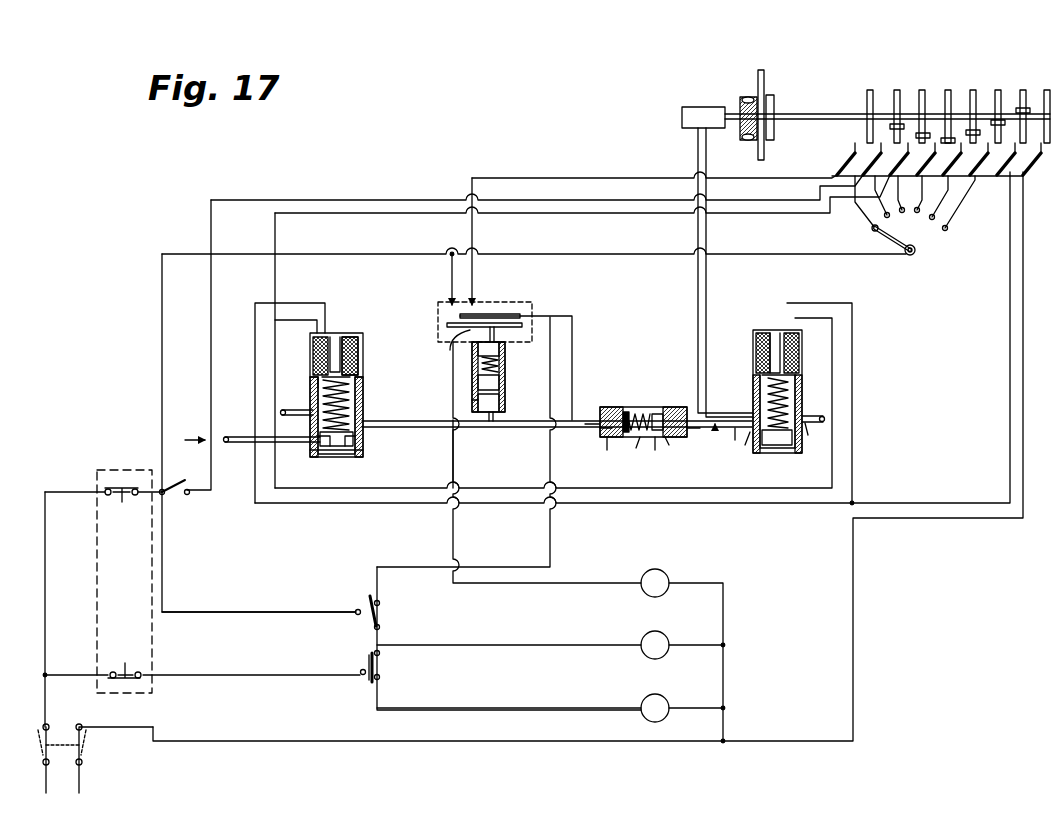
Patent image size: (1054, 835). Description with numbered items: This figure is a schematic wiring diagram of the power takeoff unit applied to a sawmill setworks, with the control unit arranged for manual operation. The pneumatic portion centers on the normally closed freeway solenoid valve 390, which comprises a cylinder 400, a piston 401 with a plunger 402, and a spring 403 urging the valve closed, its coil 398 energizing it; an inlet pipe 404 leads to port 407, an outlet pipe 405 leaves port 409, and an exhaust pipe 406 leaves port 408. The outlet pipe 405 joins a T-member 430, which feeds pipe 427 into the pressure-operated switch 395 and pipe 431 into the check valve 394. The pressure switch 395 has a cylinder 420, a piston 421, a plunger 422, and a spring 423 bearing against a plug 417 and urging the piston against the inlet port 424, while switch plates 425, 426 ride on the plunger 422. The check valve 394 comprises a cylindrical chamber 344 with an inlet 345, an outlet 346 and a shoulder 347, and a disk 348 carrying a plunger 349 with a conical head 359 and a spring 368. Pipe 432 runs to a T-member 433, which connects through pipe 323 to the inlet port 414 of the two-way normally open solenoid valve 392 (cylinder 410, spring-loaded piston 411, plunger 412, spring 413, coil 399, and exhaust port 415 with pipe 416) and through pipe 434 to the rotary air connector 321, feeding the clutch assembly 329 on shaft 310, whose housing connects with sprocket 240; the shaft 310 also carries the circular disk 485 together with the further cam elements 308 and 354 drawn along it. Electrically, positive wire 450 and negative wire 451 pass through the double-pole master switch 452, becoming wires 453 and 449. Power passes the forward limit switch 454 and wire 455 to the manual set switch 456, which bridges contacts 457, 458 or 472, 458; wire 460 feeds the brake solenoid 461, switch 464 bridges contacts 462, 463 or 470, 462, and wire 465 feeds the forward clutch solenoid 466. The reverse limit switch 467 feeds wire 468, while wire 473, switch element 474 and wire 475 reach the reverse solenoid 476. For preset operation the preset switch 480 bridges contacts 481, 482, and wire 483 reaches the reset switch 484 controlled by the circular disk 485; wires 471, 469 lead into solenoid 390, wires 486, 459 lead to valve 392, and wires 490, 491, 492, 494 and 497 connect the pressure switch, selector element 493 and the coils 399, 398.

The sprocket 240 is at (766, 75).
The cam 308 is at (908, 107).
The shaft 310 is at (820, 114).
The rotary air connector 321 is at (678, 116).
The pipe 323 is at (742, 460).
The clutch assembly 329 is at (746, 94).
The cylindrical chamber 344 is at (634, 451).
The inlet 345 is at (602, 454).
The outlet 346 is at (678, 446).
The shoulder 347 is at (626, 410).
The disk 348 is at (642, 408).
The plunger 349 is at (670, 412).
The cam 354 is at (948, 90).
The conical head 359 is at (590, 438).
The spring 368 is at (654, 455).
The freeway solenoid valve 390 is at (340, 333).
The two-way normally open solenoid valve 392 is at (765, 330).
The check valve 394 is at (632, 407).
The pressure-operated switch 395 is at (540, 307).
The coil 398 is at (358, 345).
The coil 399 is at (800, 350).
The cylinder 400 is at (355, 378).
The piston 401 is at (338, 447).
The plunger 402 is at (340, 358).
The spring 403 is at (350, 403).
The inlet pipe 404 is at (238, 445).
The outlet pipe 405 is at (420, 428).
The exhaust pipe 406 is at (300, 408).
The port 407 is at (318, 452).
The port 408 is at (310, 383).
The port 409 is at (358, 452).
The cylinder 410 is at (750, 378).
The spring-loaded piston 411 is at (777, 446).
The plunger 412 is at (750, 350).
The spring 413 is at (766, 402).
The inlet port 414 is at (734, 440).
The exhaust port 415 is at (818, 437).
The pipe 416 is at (812, 412).
The plug 417 is at (470, 356).
The cylinder 420 is at (500, 367).
The piston 421 is at (500, 383).
The plunger 422 is at (495, 332).
The spring 423 is at (500, 352).
The inlet port 424 is at (470, 400).
The switch plate 425 is at (478, 312).
The switch plate 426 is at (505, 322).
The pipe 427 is at (500, 403).
The T-member 430 is at (491, 430).
The pipe 431 is at (583, 418).
The pipe 432 is at (690, 440).
The T-member 433 is at (712, 440).
The pipe 434 is at (708, 290).
The negative wire 449 is at (400, 741).
The positive wire 450 is at (44, 773).
The negative wire 451 is at (82, 778).
The double-pole master switch 452 is at (82, 748).
The positive wire 453 is at (48, 705).
The forward limit switch 454 is at (124, 470).
The wire 455 is at (230, 612).
The manual set switch 456 is at (368, 618).
The contact 457 is at (355, 603).
The contact 458 is at (380, 627).
The wire 459 is at (855, 467).
The wire 460 is at (490, 645).
The brake solenoid 461 is at (648, 634).
The contact 462 is at (380, 653).
The contact 463 is at (380, 677).
The switch 464 is at (380, 668).
The wire 465 is at (490, 708).
The forward clutch solenoid 466 is at (655, 690).
The reverse limit switch 467 is at (120, 690).
The wire 468 is at (288, 665).
The wire 469 is at (300, 323).
The contact 470 is at (360, 676).
The wire 471 is at (790, 213).
The contact 472 is at (380, 603).
The wire 473 is at (468, 560).
The switch element 474 is at (440, 322).
The wire 475 is at (550, 355).
The reverse solenoid 476 is at (673, 566).
The preset switch 480 is at (180, 477).
The contact 481 is at (165, 496).
The contact 482 is at (190, 496).
The wire 483 is at (209, 302).
The reset switch 484 is at (848, 150).
The circular disk 485 is at (873, 92).
The wire 486 is at (252, 350).
The wire 490 is at (507, 166).
The wire 491 is at (454, 283).
The wire 492 is at (740, 254).
The switch selector element 493 is at (905, 240).
The wire 494 is at (160, 314).
The wire 497 is at (540, 470).